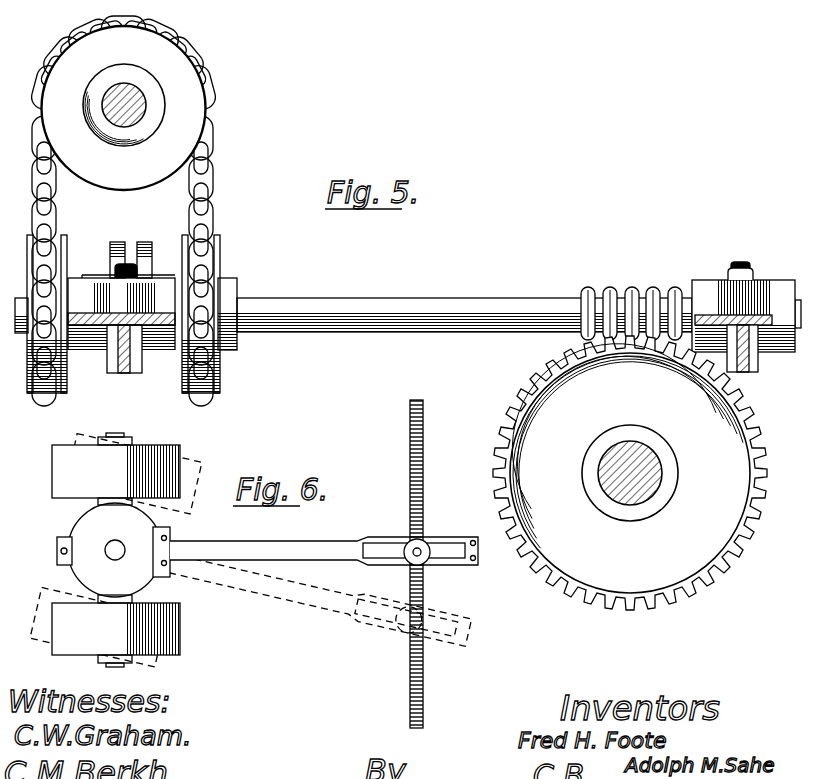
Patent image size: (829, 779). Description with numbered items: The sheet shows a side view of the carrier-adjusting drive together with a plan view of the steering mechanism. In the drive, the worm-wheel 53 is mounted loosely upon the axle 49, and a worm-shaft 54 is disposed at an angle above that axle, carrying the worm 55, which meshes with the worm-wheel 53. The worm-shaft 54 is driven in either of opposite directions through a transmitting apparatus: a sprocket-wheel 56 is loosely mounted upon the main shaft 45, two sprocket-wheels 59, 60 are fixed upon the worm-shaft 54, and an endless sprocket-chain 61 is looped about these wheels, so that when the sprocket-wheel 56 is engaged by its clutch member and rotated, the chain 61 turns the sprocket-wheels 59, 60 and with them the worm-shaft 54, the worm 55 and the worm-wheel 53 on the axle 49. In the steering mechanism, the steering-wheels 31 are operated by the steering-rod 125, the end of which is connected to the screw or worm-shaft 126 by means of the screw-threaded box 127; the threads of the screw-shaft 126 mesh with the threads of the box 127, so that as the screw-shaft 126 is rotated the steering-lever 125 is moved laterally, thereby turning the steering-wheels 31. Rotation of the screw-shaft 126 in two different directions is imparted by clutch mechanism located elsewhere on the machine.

In FIG. 5, the main shaft 45 is at (112, 100).
In FIG. 5, the sprocket-wheel 56 is at (124, 108).
In FIG. 5, the endless sprocket-chain 61 is at (212, 131).
In FIG. 5, the sprocket-wheel 60 is at (67, 246).
In FIG. 5, the sprocket-wheel 59 is at (212, 251).
In FIG. 5, the worm-shaft 54 is at (408, 304).
In FIG. 5, the worm 55 is at (597, 279).
In FIG. 5, the worm-wheel 53 is at (630, 473).
In FIG. 5, the axle 49 is at (648, 474).
In FIG. 6, the steering-wheels 31 is at (180, 452).
In FIG. 6, the steering-rod 125 is at (267, 545).
In FIG. 6, the worm-shaft 126 is at (423, 598).
In FIG. 6, the screw-threaded box 127 is at (417, 552).